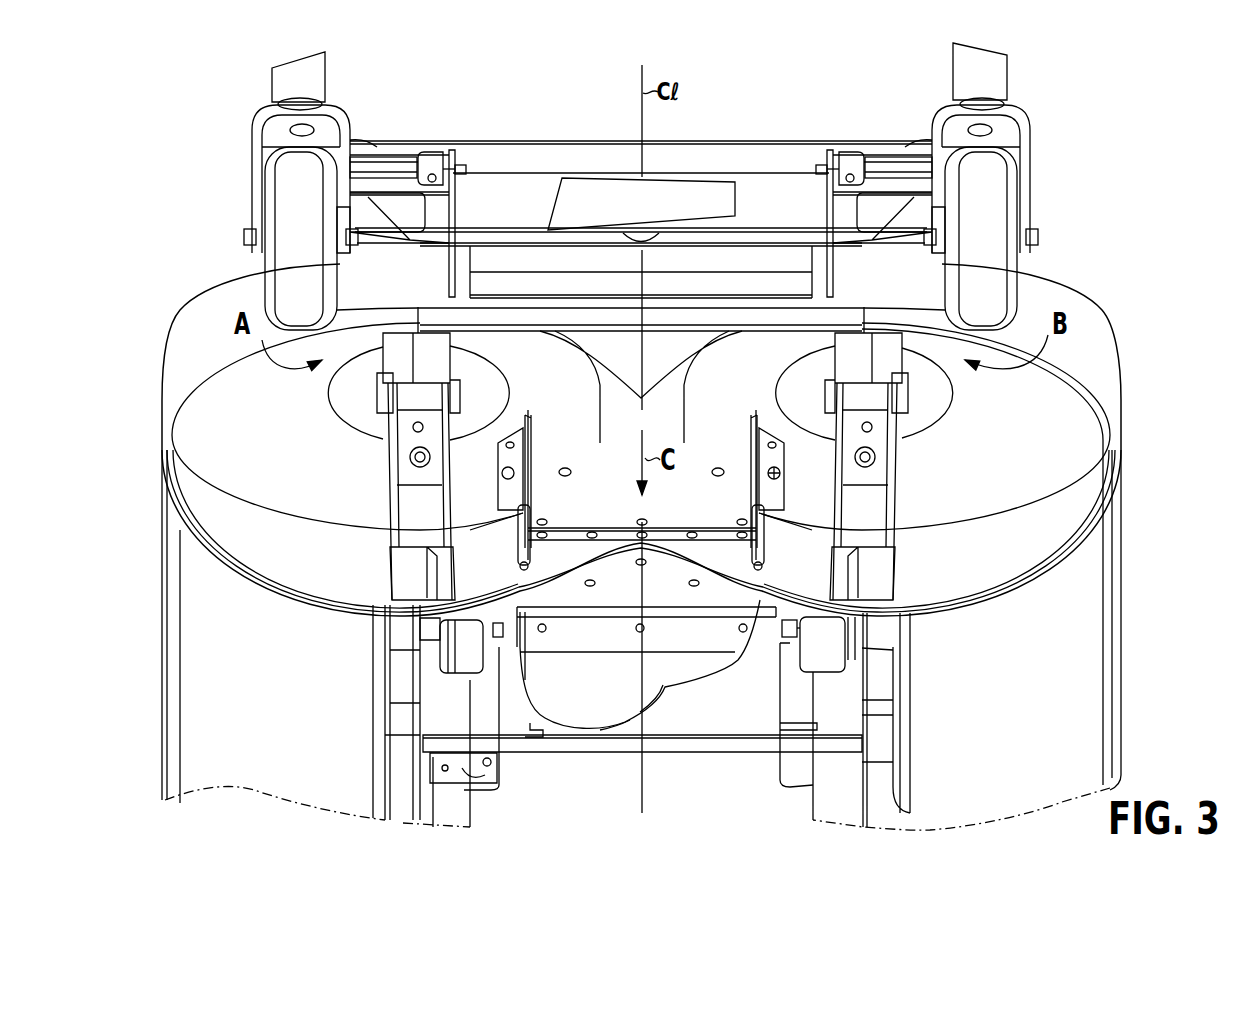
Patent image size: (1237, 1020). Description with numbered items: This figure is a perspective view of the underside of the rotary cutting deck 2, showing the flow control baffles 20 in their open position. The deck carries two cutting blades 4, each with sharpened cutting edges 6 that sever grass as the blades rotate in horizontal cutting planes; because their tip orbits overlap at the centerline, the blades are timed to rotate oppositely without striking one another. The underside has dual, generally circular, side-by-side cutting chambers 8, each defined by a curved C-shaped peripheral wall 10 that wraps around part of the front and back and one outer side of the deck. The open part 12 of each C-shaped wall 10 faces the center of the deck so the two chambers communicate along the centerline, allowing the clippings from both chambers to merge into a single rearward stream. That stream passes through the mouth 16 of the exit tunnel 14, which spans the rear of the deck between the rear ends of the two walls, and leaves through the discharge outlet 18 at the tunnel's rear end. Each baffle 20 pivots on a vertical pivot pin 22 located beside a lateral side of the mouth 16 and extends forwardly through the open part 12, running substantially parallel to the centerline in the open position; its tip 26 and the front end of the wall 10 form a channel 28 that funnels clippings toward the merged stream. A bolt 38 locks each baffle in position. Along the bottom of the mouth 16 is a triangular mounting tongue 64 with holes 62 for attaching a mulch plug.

The rotary cutting deck 2 is at (1062, 262).
The cutting blades 4 is at (413, 480).
The sharpened cutting edges 6 is at (452, 364).
The cutting chambers 8 is at (265, 418).
The C-shaped peripheral wall 10 is at (600, 385).
The open part of C-shaped wall 12 is at (584, 482).
The exit tunnel 14 is at (580, 693).
The mouth 16 is at (712, 566).
The discharge outlet 18 is at (627, 723).
The flow control baffles 20 is at (524, 455).
The pivot pins 22 is at (520, 567).
The tip of baffle 26 is at (530, 412).
The channel 28 is at (592, 430).
The bolt 38 is at (775, 478).
The holes 62 is at (638, 575).
The triangular mounting tongue 64 is at (636, 587).